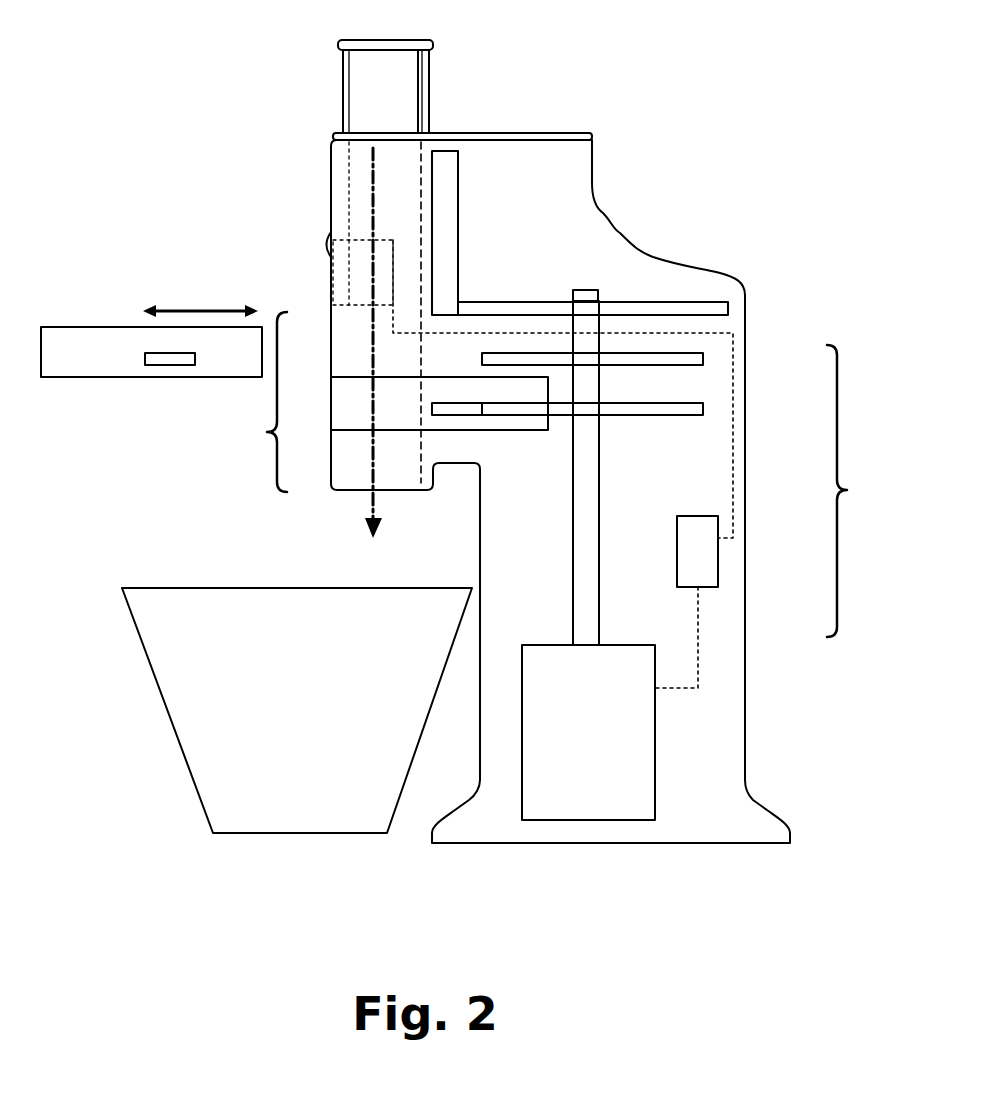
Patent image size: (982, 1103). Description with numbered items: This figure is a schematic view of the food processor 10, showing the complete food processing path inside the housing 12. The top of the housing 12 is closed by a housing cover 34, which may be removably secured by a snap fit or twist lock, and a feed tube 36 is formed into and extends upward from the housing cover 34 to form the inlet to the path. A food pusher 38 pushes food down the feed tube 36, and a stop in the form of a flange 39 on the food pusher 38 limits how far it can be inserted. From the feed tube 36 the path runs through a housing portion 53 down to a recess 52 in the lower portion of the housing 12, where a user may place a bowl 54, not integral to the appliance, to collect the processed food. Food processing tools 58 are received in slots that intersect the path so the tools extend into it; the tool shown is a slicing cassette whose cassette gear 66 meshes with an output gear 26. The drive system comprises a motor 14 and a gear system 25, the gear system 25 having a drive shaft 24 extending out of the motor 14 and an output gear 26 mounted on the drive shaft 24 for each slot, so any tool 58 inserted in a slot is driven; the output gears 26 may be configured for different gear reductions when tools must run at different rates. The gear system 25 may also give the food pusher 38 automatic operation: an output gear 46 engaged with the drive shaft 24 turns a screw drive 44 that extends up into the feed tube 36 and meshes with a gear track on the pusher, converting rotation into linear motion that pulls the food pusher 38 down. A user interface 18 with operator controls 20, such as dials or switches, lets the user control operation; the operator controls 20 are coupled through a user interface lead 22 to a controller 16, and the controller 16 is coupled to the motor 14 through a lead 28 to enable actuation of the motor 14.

The food processor 10 is at (745, 86).
The housing 12 is at (747, 601).
The motor 14 is at (618, 797).
The controller 16 is at (700, 564).
The user interface 18 is at (330, 233).
The operator controls 20 is at (325, 243).
The user interface lead 22 is at (733, 455).
The drive shaft 24 is at (592, 482).
The gear system 25 is at (854, 491).
The output gear 26 is at (703, 410).
The lead 28 is at (698, 638).
The housing cover 34 is at (592, 128).
The feed tube 36 is at (429, 86).
The food pusher 38 is at (370, 78).
The flange 39 is at (360, 42).
The screw drive 44 is at (445, 230).
The output gear 46 is at (720, 300).
The recess 52 is at (447, 524).
The housing portion 53 is at (307, 343).
The bowl 54 is at (210, 743).
The food processing tool 58 is at (67, 328).
The cassette gear 66 is at (160, 360).